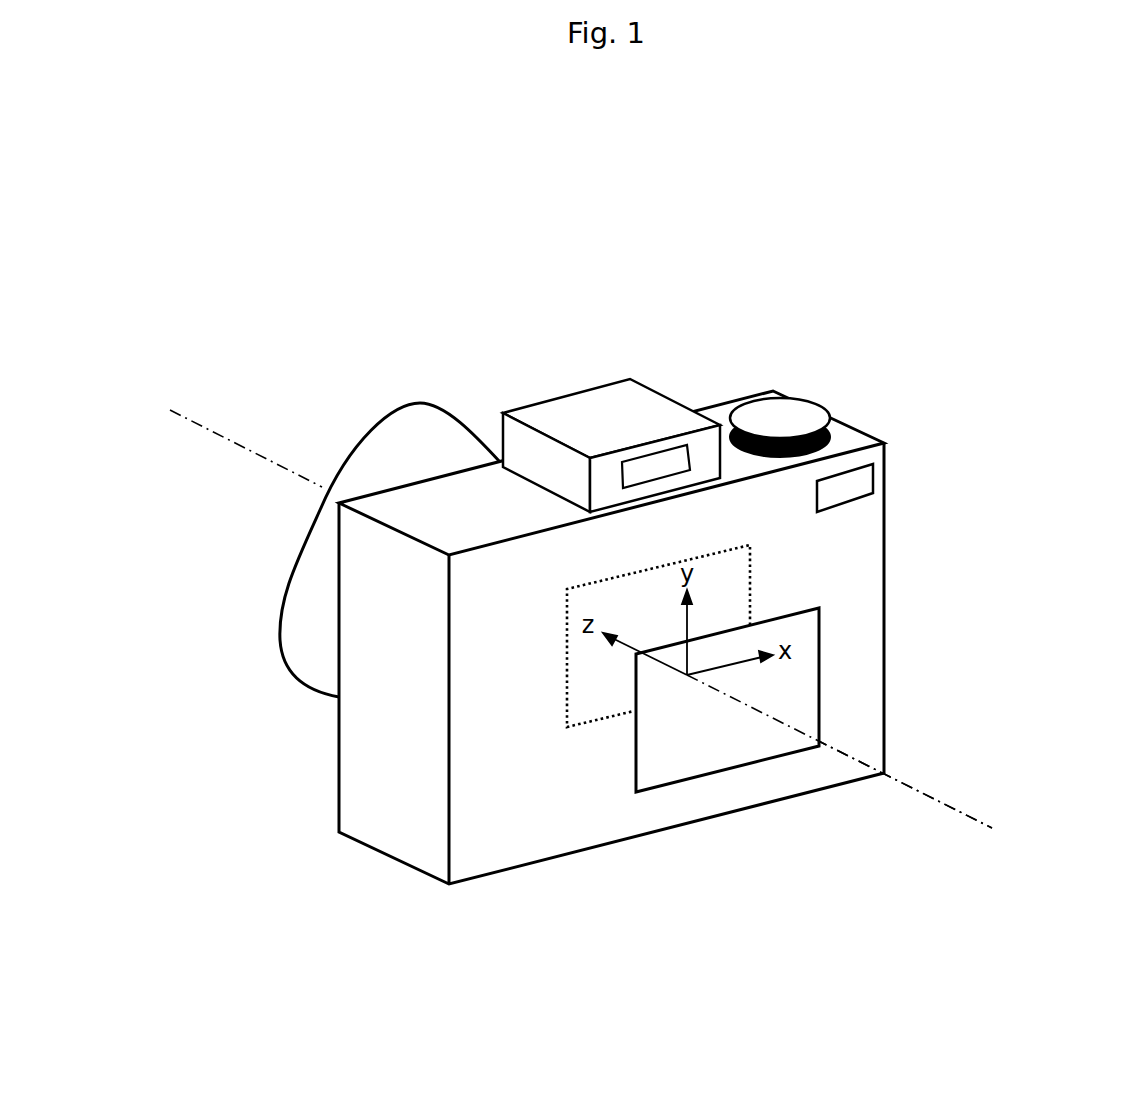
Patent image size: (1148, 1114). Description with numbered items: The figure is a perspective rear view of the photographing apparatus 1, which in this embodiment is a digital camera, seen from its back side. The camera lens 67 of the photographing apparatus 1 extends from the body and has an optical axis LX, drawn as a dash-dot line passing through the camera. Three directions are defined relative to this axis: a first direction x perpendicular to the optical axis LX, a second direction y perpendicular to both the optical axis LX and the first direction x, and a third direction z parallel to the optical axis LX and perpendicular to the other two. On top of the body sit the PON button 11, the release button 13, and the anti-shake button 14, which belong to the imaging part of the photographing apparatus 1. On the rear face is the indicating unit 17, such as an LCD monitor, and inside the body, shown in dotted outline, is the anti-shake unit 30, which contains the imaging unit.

The photographing apparatus 1 is at (773, 391).
The PON button 11 is at (874, 466).
The release button 13 is at (808, 399).
The anti-shake button 14 is at (635, 460).
The indicating unit 17 is at (819, 627).
The anti-shake unit 30 is at (750, 545).
The camera lens 67 is at (458, 411).
The optical axis LX is at (600, 629).